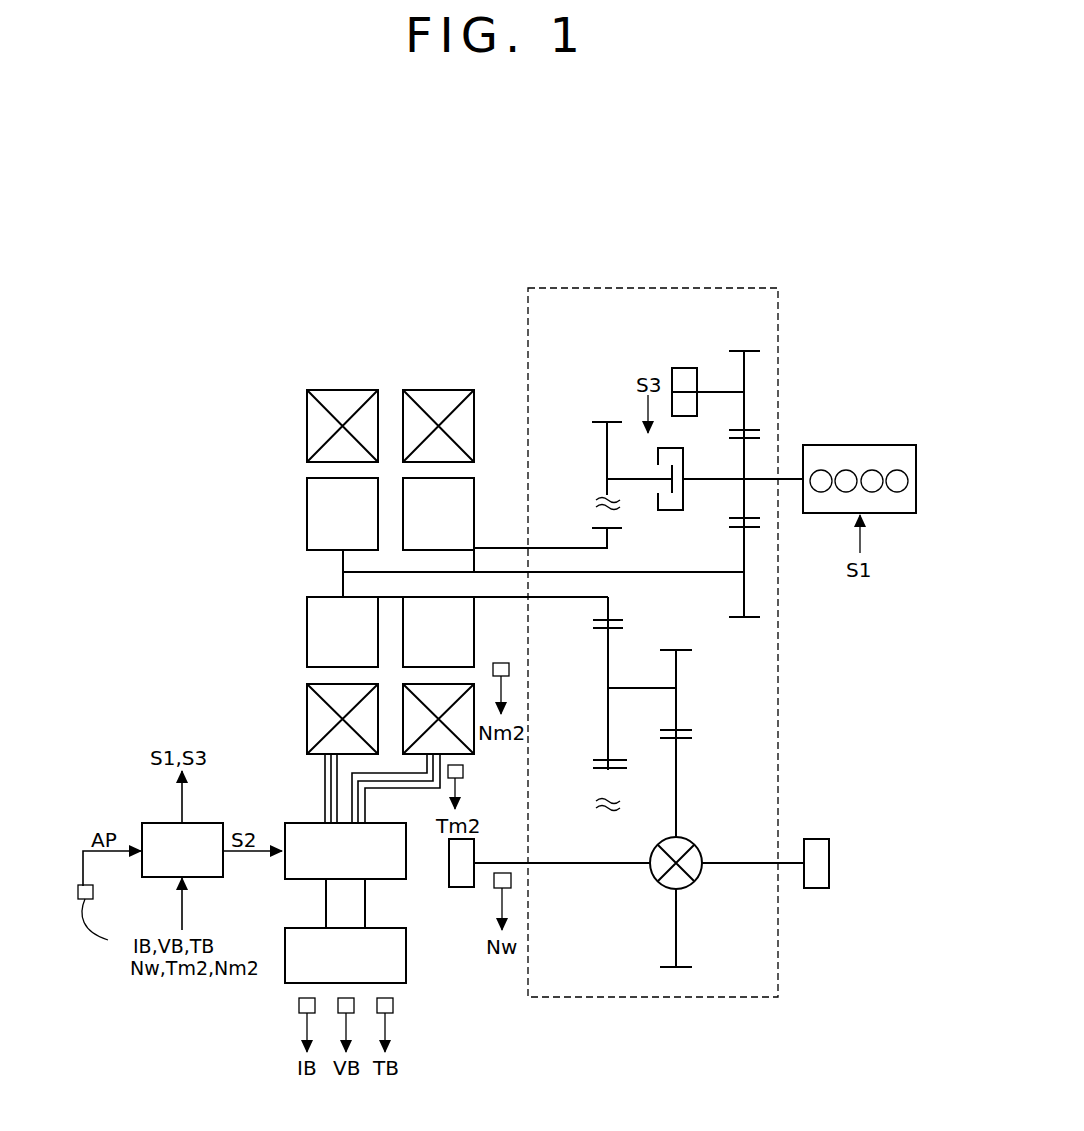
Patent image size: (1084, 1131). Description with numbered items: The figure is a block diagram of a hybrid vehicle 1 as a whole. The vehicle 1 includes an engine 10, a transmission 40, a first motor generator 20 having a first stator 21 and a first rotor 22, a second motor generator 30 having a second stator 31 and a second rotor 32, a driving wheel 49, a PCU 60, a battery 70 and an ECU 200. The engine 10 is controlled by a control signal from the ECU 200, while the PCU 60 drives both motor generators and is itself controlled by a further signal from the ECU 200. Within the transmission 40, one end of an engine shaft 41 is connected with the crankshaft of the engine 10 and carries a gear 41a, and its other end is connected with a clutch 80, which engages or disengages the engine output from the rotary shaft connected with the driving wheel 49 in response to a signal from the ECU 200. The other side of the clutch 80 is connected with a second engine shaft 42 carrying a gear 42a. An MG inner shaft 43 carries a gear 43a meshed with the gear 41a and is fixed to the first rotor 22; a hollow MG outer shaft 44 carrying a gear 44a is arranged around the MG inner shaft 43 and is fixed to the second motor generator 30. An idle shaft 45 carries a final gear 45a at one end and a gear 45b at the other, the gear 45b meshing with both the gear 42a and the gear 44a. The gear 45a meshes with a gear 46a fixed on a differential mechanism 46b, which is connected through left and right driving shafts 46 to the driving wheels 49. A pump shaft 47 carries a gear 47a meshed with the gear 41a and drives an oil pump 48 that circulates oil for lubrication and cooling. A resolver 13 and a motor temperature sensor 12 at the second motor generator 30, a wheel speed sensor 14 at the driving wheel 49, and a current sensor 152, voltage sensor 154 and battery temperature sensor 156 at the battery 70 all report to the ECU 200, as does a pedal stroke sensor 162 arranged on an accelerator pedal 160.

The hybrid vehicle 1 is at (886, 245).
The engine 10 is at (862, 445).
The motor temperature sensor 12 is at (463, 770).
The resolver 13 is at (509, 669).
The wheel speed sensor 14 is at (511, 880).
The first motor generator 20 is at (311, 532).
The first stator 21 is at (346, 390).
The first rotor 22 is at (307, 512).
The second motor generator 30 is at (466, 533).
The second stator 31 is at (420, 390).
The second rotor 32 is at (476, 510).
The transmission 40 is at (735, 288).
The engine shaft 41 is at (712, 482).
The gear 41a is at (747, 460).
The engine shaft 42 is at (628, 474).
The gear 42a is at (607, 450).
The MG inner shaft 43 is at (661, 571).
The gear 43a is at (744, 597).
The MG outer shaft 44 is at (565, 547).
The gear 44a is at (610, 609).
The idle shaft 45 is at (637, 686).
The gear 45a is at (680, 674).
The gear 45b is at (607, 647).
The driving shaft 46 is at (738, 860).
The gear 46a is at (680, 756).
The differential mechanism 46b is at (696, 879).
The pump shaft 47 is at (708, 389).
The gear 47a is at (744, 371).
The oil pump 48 is at (683, 367).
The driving wheel 49 is at (829, 861).
The PCU 60 is at (385, 821).
The battery 70 is at (385, 927).
The clutch 80 is at (668, 445).
The current sensor 152 is at (299, 1005).
The voltage sensor 154 is at (354, 1000).
The battery temperature sensor 156 is at (393, 1007).
The accelerator pedal 160 is at (100, 935).
The pedal stroke sensor 162 is at (93, 892).
The ECU 200 is at (197, 822).